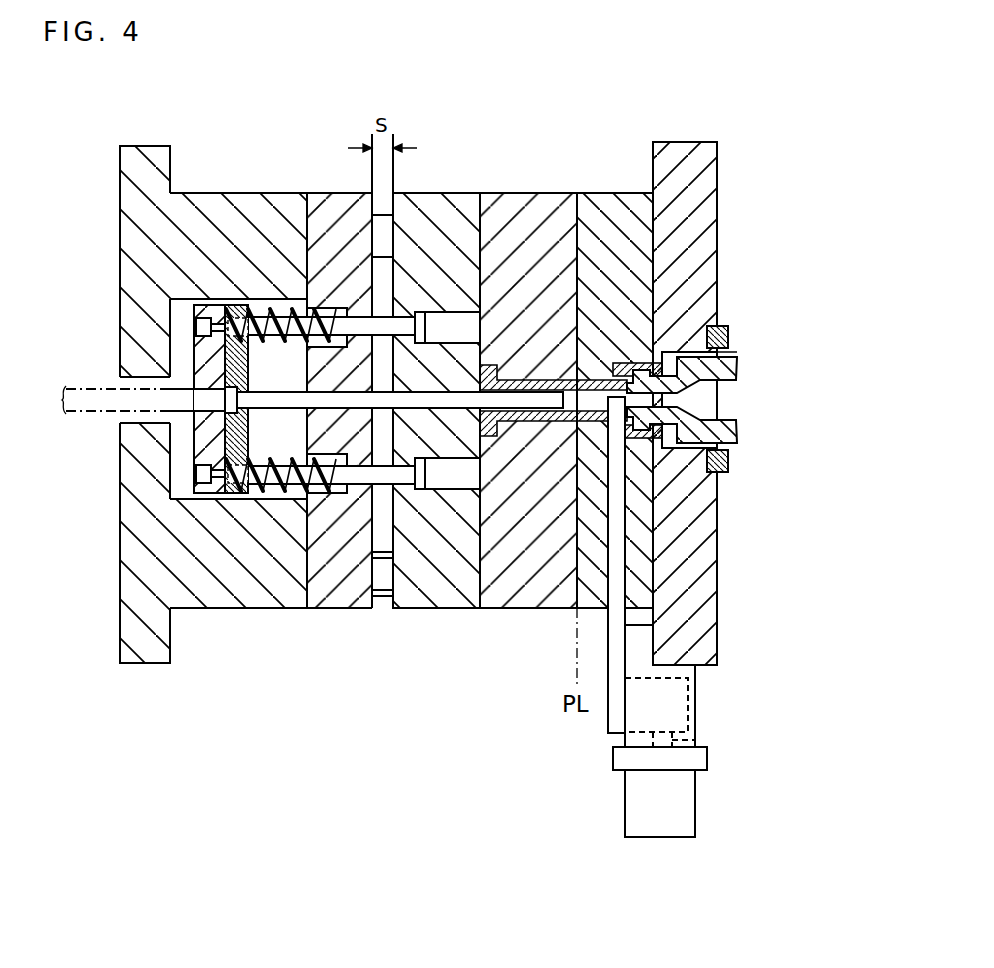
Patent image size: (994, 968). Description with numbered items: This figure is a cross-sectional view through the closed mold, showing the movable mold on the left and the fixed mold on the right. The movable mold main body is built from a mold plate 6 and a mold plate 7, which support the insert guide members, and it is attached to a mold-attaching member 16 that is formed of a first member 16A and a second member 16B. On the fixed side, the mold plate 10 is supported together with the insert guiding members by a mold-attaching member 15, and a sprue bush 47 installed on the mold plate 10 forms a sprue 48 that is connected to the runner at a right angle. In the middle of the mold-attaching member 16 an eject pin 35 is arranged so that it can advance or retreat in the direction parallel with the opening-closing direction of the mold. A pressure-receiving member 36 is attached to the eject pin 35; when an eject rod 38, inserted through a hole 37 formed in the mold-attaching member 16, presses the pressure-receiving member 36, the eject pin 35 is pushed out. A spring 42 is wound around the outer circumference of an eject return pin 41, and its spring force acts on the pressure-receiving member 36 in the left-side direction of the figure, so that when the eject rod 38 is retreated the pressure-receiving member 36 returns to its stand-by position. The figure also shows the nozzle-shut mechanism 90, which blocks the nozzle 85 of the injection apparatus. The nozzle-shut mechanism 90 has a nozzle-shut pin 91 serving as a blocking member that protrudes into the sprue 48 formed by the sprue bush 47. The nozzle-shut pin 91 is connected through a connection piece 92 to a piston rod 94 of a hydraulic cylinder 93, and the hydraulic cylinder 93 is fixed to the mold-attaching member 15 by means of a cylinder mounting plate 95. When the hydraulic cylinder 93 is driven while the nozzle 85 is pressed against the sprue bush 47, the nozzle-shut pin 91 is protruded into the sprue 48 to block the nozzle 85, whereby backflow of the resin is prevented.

The mold plate 6 is at (532, 578).
The mold plate 7 is at (448, 577).
The mold plate 10 is at (592, 580).
The mold-attaching member 15 is at (683, 153).
The mold-attaching member 16 is at (230, 583).
The first member 16A is at (150, 635).
The second member 16B is at (345, 585).
The eject pin 35 is at (273, 402).
The pressure-receiving member 36 is at (210, 360).
The hole 37 is at (140, 413).
The eject rod 38 is at (100, 388).
The eject return pin 41 is at (285, 323).
The spring 42 is at (273, 317).
The sprue bush 47 is at (604, 383).
The sprue 48 is at (578, 398).
The nozzle 85 is at (736, 434).
The nozzle-shut mechanism 90 is at (737, 731).
The nozzle-shut pin 91 is at (616, 535).
The connection piece 92 is at (697, 712).
The hydraulic cylinder 93 is at (697, 795).
The piston rod 94 is at (697, 740).
The cylinder mounting plate 95 is at (697, 687).